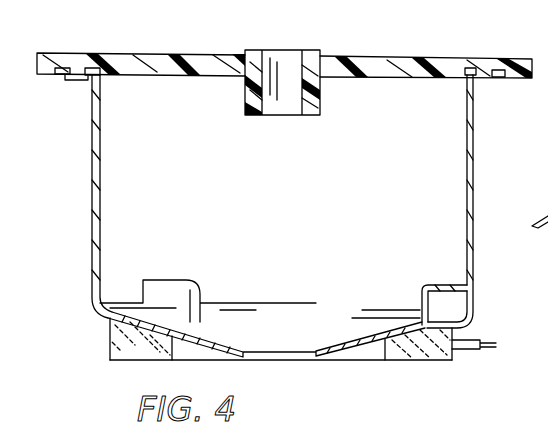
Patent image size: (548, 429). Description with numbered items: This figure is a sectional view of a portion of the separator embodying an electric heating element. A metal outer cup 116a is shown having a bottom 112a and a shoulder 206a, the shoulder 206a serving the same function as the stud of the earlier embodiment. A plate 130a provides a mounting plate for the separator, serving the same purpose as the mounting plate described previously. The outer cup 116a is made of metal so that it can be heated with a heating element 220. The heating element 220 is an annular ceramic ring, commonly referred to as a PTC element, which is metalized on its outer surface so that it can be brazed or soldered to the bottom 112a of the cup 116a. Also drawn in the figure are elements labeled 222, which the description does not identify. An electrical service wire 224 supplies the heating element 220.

The plate 130a is at (400, 62).
The metal outer cup 116a is at (481, 247).
The shoulder 206a is at (432, 285).
The bottom 112a is at (343, 335).
The support blocks 222 is at (108, 314).
The heating element 220 is at (380, 353).
The electrical service wire 224 is at (472, 351).